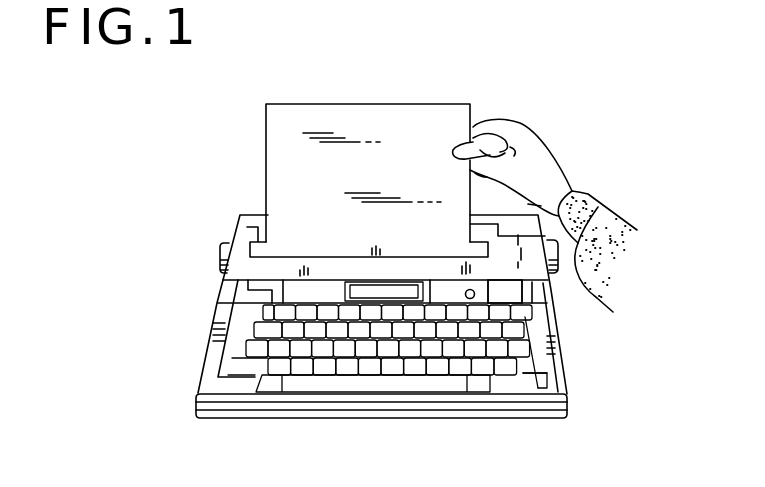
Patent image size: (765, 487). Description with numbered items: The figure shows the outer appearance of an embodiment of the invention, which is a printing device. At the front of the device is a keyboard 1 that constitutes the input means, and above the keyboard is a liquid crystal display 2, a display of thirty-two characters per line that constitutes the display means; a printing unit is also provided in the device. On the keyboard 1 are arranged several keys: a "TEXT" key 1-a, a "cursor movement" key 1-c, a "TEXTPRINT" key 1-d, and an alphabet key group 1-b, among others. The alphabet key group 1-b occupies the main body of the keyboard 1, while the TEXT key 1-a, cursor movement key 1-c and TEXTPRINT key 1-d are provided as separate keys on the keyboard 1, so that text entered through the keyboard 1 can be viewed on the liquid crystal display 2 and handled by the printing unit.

The keyboard 1 is at (360, 384).
The TEXT key 1-a is at (536, 384).
The alphabet key group 1-b is at (264, 312).
The cursor movement key 1-c is at (513, 297).
The TEXTPRINT key 1-d is at (527, 314).
The liquid crystal display 2 is at (358, 284).